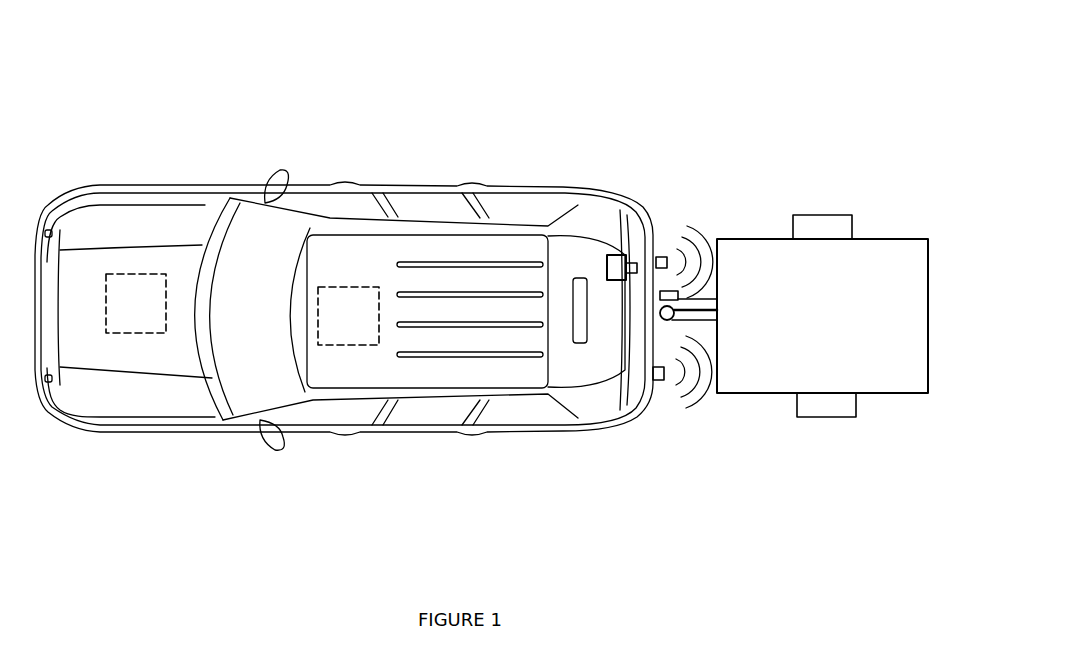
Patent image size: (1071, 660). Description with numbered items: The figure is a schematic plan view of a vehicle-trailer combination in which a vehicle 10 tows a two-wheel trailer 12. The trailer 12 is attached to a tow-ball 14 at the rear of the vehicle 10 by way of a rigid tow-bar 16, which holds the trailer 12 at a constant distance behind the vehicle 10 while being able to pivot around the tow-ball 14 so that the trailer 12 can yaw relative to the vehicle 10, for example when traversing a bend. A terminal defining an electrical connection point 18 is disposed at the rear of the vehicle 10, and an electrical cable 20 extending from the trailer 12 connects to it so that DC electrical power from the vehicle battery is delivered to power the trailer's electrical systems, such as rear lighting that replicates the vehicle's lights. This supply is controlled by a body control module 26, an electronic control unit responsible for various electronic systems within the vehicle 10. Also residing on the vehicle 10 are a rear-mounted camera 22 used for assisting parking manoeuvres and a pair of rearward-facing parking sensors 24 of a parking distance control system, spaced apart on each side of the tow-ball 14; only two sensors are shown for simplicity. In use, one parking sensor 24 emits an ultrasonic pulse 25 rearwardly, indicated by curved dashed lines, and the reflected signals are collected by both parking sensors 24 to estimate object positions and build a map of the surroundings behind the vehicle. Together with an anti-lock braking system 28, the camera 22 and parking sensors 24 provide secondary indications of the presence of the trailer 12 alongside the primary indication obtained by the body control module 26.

The vehicle 10 is at (104, 79).
The two-wheel trailer 12 is at (884, 168).
The tow-ball 14 is at (668, 321).
The rigid tow-bar 16 is at (695, 318).
The electrical connection point 18 is at (666, 295).
The electrical cable 20 is at (702, 297).
The rear-mounted camera 22 is at (618, 262).
The rearward-facing parking sensors 24 is at (662, 258).
The ultrasonic pulse 25 is at (707, 396).
The body control module 26 is at (345, 303).
The anti-lock braking system 28 is at (132, 288).